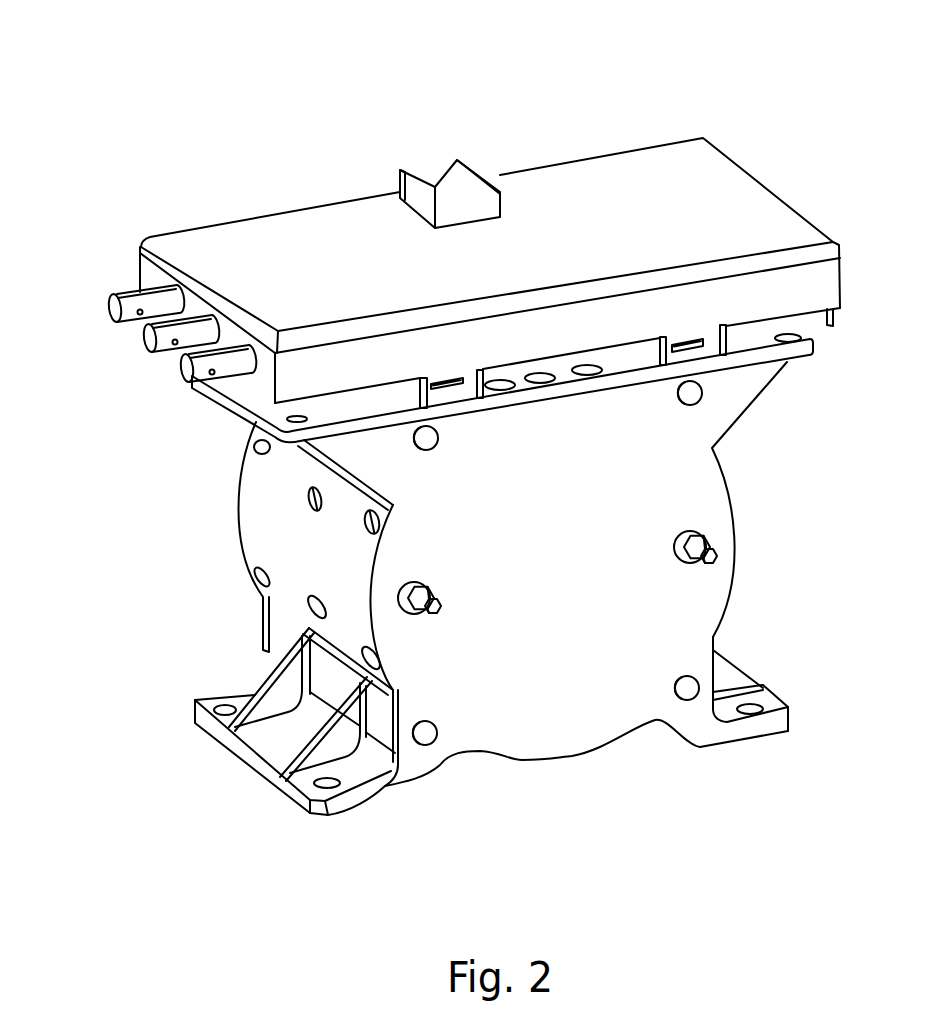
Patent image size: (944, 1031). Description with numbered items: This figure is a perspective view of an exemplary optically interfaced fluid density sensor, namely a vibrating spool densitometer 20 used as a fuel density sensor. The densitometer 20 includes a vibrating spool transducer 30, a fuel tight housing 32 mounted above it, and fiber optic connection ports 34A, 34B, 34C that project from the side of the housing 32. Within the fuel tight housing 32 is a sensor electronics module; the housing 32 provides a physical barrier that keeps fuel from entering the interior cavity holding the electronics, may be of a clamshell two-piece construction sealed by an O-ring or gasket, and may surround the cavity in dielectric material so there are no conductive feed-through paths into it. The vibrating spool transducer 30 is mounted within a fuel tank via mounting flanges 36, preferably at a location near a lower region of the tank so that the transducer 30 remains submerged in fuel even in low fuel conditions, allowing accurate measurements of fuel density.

The vibrating spool densitometer 20 is at (772, 82).
The fuel tight housing 32 is at (255, 218).
The fiber optic connection port 34A is at (110, 305).
The fiber optic connection port 34B is at (143, 338).
The fiber optic connection port 34C is at (181, 372).
The vibrating spool transducer 30 is at (540, 688).
The mounting flange 36 is at (250, 764).